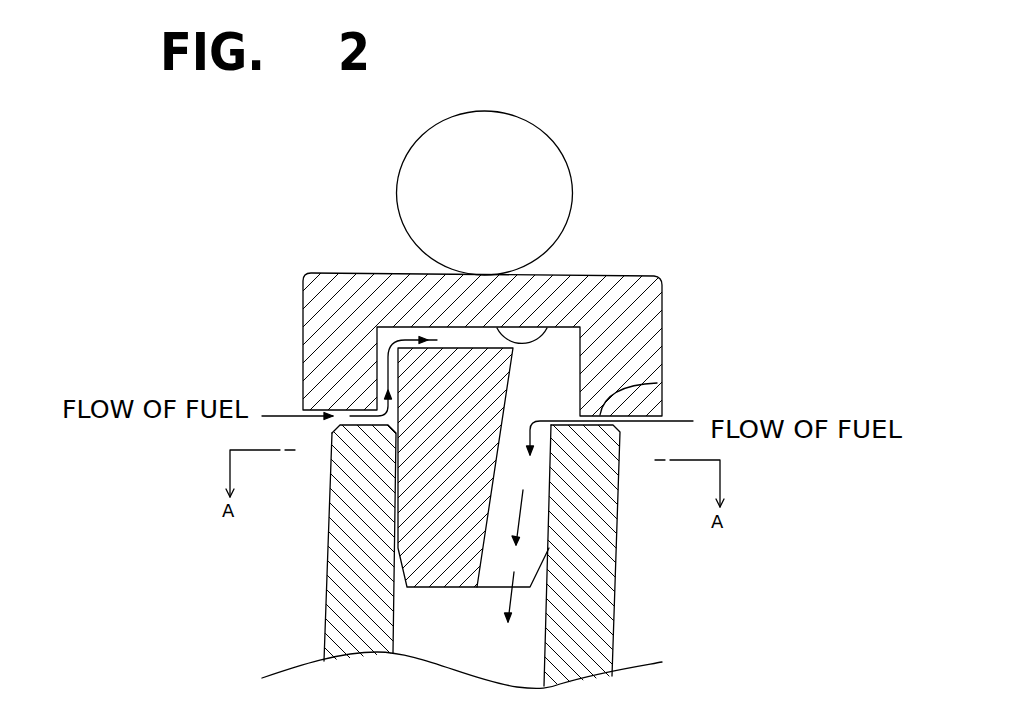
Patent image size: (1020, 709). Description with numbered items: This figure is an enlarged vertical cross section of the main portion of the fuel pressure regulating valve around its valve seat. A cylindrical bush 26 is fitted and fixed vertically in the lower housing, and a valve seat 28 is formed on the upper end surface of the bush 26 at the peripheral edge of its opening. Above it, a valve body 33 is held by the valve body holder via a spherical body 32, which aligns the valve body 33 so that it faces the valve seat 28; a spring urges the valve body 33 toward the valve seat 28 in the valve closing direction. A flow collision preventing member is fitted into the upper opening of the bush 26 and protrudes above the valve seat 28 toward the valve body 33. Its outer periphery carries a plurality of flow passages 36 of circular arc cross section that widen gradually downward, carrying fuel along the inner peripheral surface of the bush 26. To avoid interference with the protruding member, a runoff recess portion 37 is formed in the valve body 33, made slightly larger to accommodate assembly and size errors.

The spherical body 32 is at (566, 162).
The valve body 33 is at (632, 340).
The valve seat 28 is at (633, 382).
The flow passage 36 is at (528, 535).
The bush 26 is at (590, 612).
The runoff recess portion 37 is at (565, 332).